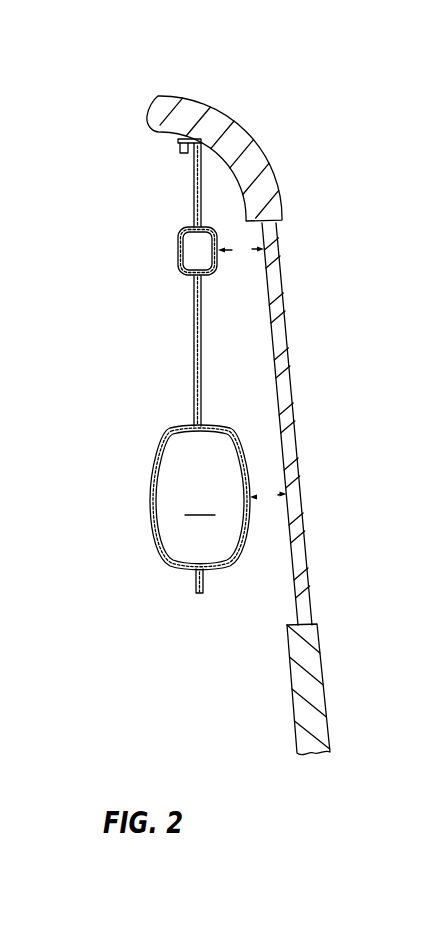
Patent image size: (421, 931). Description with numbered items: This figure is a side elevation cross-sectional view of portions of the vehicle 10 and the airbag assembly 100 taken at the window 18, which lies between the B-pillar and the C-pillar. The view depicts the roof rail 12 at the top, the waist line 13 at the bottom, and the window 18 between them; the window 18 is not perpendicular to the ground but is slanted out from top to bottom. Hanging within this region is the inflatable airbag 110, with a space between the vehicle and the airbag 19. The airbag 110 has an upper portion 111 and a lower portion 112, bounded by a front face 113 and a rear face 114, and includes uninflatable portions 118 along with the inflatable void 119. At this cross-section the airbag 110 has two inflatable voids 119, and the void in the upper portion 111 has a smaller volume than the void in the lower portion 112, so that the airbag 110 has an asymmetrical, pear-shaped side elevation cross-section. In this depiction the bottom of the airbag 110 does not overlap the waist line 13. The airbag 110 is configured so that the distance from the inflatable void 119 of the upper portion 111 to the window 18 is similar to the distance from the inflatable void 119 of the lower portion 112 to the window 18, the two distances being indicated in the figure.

The airbag assembly 100 is at (110, 106).
The vehicle 10 is at (287, 146).
The roof rail 12 is at (217, 108).
The window 18 is at (285, 335).
The waist line 13 is at (313, 624).
The space between the vehicle and the airbag 19 is at (230, 226).
The inflatable airbag 110 is at (60, 241).
The upper portion 111 is at (164, 223).
The lower portion 112 is at (130, 558).
The front face 113 is at (194, 298).
The rear face 114 is at (203, 320).
The uninflatable portions 118 is at (193, 168).
The inflatable void 119 is at (195, 253).